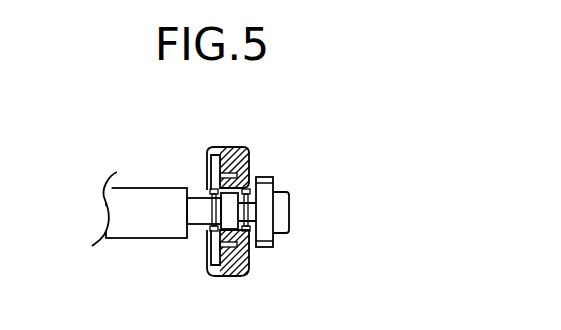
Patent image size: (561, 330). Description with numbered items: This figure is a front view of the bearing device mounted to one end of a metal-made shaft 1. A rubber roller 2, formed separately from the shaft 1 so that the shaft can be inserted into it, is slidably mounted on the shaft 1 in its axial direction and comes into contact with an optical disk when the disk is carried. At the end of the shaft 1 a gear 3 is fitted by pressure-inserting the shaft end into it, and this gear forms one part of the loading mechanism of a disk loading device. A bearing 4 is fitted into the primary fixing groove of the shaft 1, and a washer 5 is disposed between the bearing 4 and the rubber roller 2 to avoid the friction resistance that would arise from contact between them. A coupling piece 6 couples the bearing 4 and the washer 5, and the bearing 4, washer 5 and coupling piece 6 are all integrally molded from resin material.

The shaft 1 is at (197, 210).
The rubber roller 2 is at (150, 189).
The gear 3 is at (273, 181).
The bearing 4 is at (247, 215).
The washer 5 is at (204, 226).
The coupling piece 6 is at (240, 147).